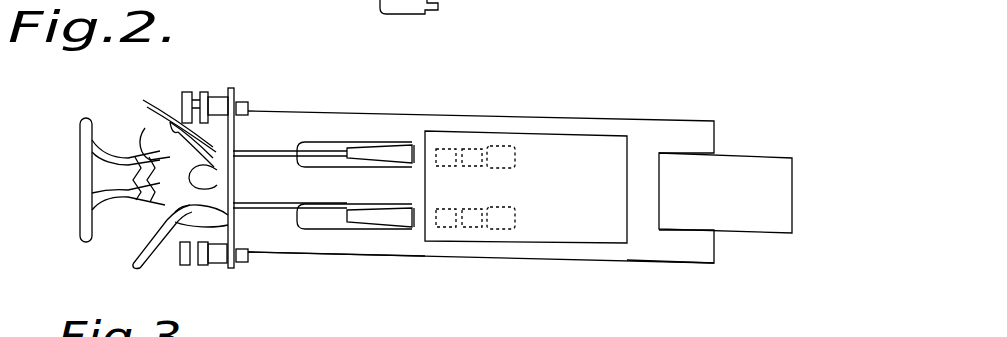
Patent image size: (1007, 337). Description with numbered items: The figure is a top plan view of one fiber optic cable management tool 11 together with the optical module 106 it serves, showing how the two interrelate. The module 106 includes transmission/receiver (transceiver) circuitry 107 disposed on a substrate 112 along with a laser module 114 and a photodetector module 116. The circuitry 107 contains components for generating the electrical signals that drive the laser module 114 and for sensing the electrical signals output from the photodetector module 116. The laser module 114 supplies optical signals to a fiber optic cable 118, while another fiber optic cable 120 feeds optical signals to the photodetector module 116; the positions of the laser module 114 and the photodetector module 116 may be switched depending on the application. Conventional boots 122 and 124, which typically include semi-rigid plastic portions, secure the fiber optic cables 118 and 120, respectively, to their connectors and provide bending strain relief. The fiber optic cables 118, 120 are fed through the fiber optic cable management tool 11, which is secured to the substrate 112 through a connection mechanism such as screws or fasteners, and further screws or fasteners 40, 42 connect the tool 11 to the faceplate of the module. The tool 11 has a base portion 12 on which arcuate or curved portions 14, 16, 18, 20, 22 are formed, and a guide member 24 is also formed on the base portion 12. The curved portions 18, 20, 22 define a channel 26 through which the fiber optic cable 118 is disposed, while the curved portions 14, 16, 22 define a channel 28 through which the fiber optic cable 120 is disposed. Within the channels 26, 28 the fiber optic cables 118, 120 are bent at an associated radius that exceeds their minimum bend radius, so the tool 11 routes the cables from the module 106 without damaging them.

The fiber optic cable management tool 11 is at (78, 192).
The guide member 24 is at (82, 163).
The curved portion 18 is at (177, 120).
The curved portion 22 is at (210, 167).
The channel 26 is at (216, 178).
The channel 28 is at (229, 226).
The curved portion 16 is at (162, 250).
The curved portion 20 is at (188, 92).
The screw or fastener 40 is at (217, 102).
The curved portion 14 is at (215, 259).
The base portion 12 is at (231, 269).
The screw or fastener 42 is at (217, 258).
The module 106 is at (702, 93).
The substrate 112 is at (294, 243).
The transmission/receiver circuitry 107 is at (648, 245).
The photodetector module 116 is at (748, 177).
The laser module 114 is at (598, 163).
The boot 124 is at (403, 242).
The boot 122 is at (395, 148).
The fiber optic cable 118 is at (331, 150).
The fiber optic cable 120 is at (332, 218).